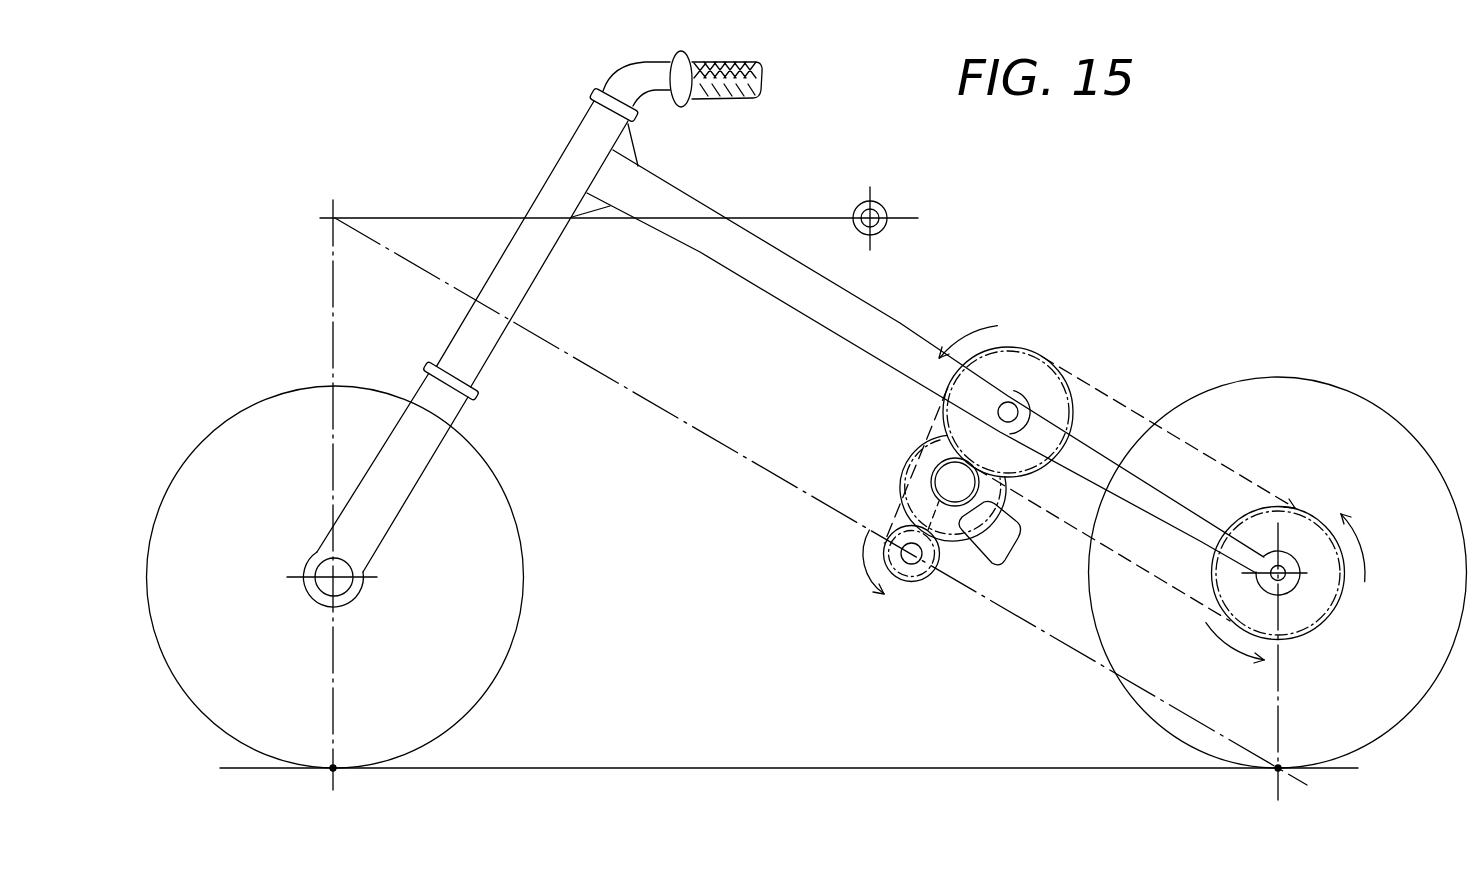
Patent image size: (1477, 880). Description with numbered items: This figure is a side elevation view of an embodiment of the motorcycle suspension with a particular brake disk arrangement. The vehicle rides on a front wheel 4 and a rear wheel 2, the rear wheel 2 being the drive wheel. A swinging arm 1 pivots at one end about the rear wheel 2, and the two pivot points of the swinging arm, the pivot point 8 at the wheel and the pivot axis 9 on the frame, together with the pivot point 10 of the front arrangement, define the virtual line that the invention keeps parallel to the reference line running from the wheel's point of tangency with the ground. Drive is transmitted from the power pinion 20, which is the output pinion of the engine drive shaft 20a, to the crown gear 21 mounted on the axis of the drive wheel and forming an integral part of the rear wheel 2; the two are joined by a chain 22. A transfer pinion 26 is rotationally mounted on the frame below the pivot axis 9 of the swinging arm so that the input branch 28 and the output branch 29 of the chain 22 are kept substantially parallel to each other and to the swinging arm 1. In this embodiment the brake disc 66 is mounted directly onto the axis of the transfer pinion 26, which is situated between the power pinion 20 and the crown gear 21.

The swinging arm 1 is at (1087, 460).
The rear wheel 2 is at (1352, 725).
The front wheel 4 is at (503, 585).
The pivot point 8 is at (1282, 578).
The pivot axis 9 is at (1010, 408).
The pivot point 10 is at (343, 557).
The power pinion 20 is at (920, 570).
The engine drive shaft 20a is at (905, 552).
The crown gear 21 is at (1308, 531).
The chain 22 is at (1258, 462).
The transfer pinion 26 is at (955, 480).
The input branch 28 is at (1145, 572).
The output branch 29 is at (1192, 444).
The brake disc 66 is at (925, 449).